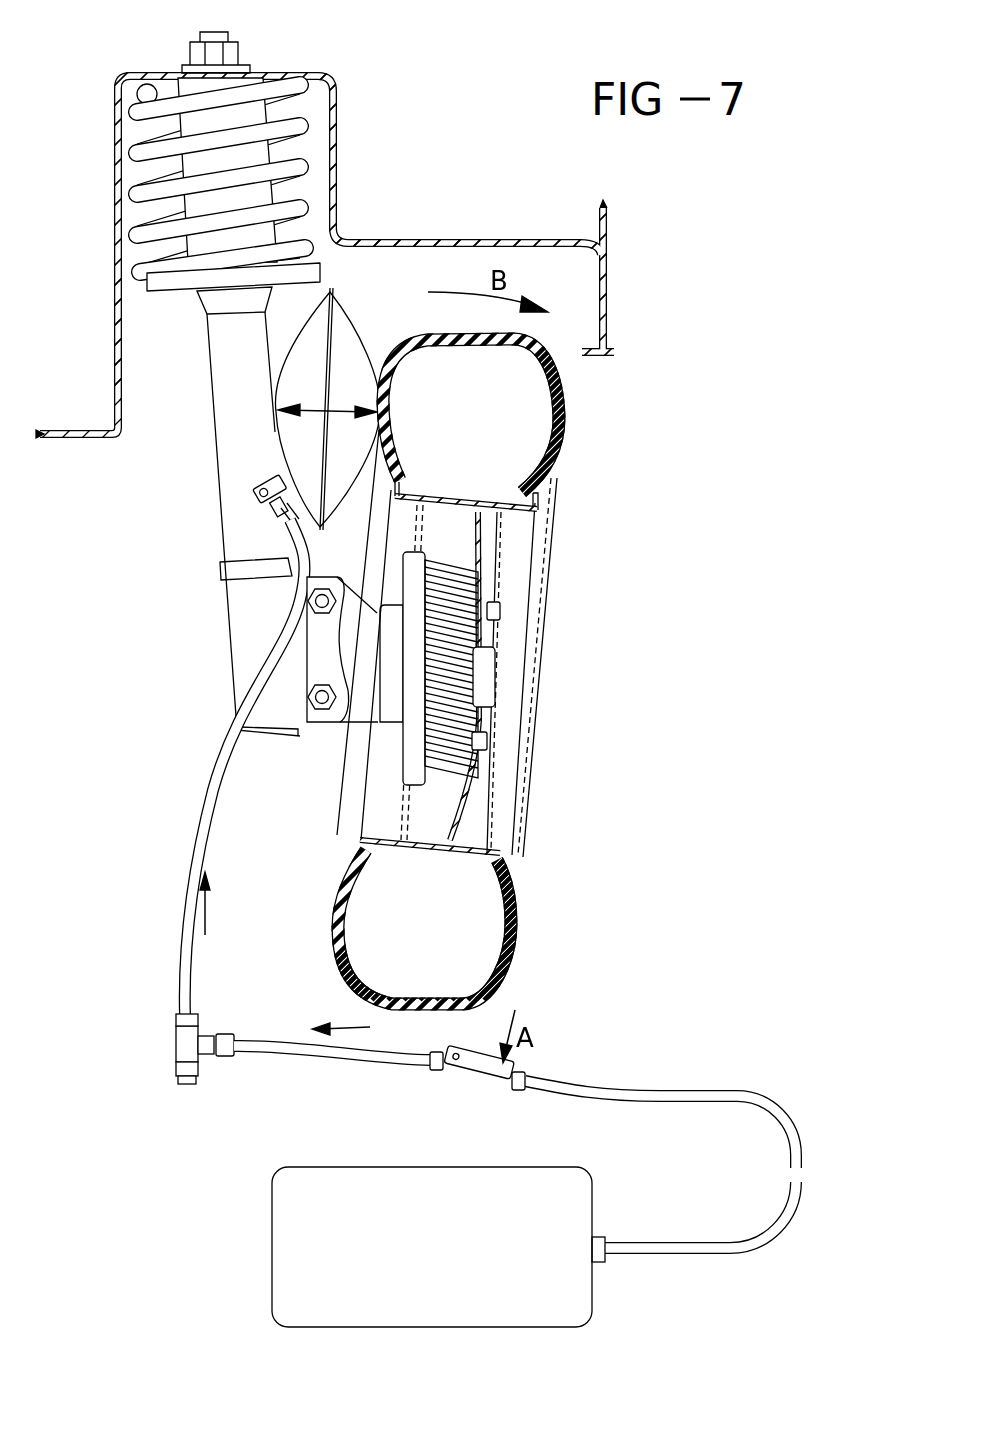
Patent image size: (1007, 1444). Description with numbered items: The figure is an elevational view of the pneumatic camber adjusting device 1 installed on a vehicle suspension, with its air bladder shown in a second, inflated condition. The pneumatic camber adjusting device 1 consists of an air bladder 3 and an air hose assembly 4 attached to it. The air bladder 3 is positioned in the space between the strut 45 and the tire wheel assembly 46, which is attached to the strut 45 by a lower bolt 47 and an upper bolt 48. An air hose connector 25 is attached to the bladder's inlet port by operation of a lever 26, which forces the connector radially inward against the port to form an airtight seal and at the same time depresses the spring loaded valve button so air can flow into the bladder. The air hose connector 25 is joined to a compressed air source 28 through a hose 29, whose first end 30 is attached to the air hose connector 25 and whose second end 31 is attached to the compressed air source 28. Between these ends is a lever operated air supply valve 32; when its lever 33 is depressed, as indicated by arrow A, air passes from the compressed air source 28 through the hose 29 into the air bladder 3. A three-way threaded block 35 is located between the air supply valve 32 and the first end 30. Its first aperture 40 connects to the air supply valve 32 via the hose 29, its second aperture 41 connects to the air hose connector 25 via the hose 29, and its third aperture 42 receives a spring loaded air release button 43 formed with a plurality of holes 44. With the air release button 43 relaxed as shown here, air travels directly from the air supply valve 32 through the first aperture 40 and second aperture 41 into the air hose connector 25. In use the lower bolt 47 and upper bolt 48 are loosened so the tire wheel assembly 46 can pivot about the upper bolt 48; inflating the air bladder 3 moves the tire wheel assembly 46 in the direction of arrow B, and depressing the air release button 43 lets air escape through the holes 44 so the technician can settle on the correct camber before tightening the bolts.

The pneumatic camber adjusting device 1 is at (272, 358).
The air bladder 3 is at (275, 424).
The air hose assembly 4 is at (187, 849).
The air hose connector 25 is at (262, 488).
The lever 26 is at (268, 507).
The compressed air source 28 is at (290, 1247).
The hose 29 is at (208, 783).
The first end 30 is at (282, 522).
The second end 31 is at (620, 1245).
The lever operated air supply valve 32 is at (463, 1078).
The lever 33 is at (488, 1082).
The three-way threaded block 35 is at (178, 1042).
The first aperture 40 is at (205, 1040).
The second aperture 41 is at (185, 1018).
The third aperture 42 is at (205, 1057).
The spring loaded air release button 43 is at (188, 1086).
The holes 44 is at (182, 1066).
The strut 45 is at (228, 406).
The tire wheel assembly 46 is at (550, 497).
The lower bolt 47 is at (322, 708).
The upper bolt 48 is at (310, 600).